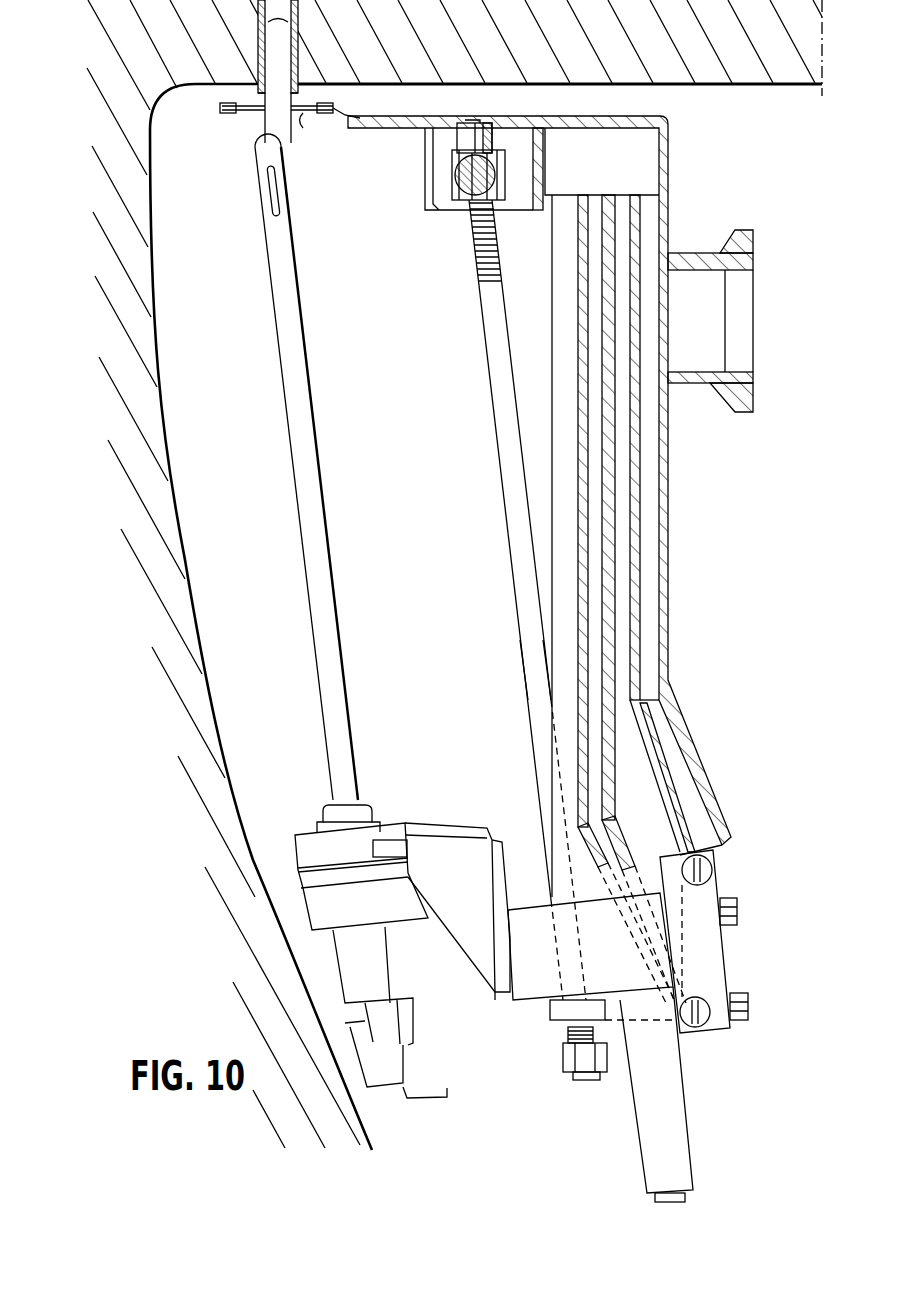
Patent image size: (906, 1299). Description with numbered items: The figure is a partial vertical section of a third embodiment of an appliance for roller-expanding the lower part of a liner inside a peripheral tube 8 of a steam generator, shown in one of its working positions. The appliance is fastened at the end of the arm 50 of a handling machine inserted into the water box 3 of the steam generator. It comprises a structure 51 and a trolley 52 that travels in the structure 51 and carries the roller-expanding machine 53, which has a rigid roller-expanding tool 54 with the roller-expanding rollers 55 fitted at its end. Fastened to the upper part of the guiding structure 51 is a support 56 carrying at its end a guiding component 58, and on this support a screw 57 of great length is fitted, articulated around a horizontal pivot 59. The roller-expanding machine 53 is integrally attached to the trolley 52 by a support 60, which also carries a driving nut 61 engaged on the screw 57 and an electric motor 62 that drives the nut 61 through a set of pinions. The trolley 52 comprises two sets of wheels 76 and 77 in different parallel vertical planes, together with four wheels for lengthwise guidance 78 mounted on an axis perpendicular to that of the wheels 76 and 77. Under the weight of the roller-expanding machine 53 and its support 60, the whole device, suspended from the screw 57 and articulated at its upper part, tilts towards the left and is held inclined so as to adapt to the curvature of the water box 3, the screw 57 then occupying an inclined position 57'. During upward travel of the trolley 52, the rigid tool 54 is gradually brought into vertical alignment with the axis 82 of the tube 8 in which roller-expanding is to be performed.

The water box 3 is at (232, 808).
The tube 8 is at (298, 62).
The arm 50 is at (745, 378).
The structure 51 is at (670, 460).
The trolley 52 is at (722, 952).
The roller-expanding machine 53 is at (310, 850).
The roller-expanding tool 54 is at (278, 244).
The roller-expanding rollers 55 is at (270, 181).
The support 56 is at (655, 163).
The screw 57 is at (511, 640).
The inclined position of the screw 57' is at (514, 680).
The guiding component 58 is at (330, 130).
The horizontal pivot 59 is at (452, 178).
The support 60 is at (523, 943).
The driving nut 61 is at (600, 1000).
The electric motor 62 is at (645, 1108).
The wheels 76 is at (700, 1026).
The wheels 77 is at (705, 861).
The wheels for lengthwise guidance 78 is at (737, 906).
The axis 82 is at (265, 126).